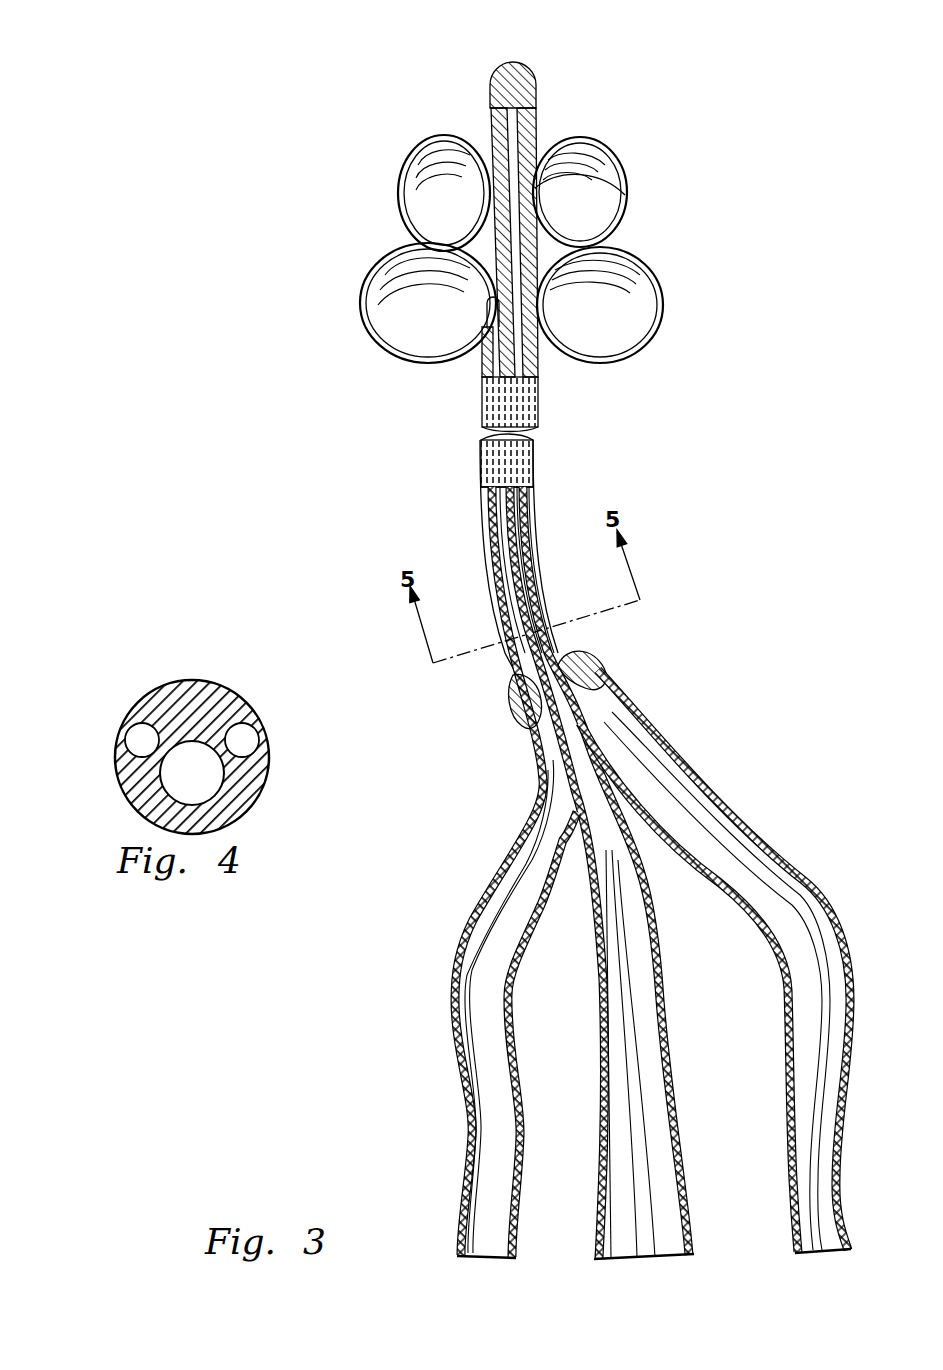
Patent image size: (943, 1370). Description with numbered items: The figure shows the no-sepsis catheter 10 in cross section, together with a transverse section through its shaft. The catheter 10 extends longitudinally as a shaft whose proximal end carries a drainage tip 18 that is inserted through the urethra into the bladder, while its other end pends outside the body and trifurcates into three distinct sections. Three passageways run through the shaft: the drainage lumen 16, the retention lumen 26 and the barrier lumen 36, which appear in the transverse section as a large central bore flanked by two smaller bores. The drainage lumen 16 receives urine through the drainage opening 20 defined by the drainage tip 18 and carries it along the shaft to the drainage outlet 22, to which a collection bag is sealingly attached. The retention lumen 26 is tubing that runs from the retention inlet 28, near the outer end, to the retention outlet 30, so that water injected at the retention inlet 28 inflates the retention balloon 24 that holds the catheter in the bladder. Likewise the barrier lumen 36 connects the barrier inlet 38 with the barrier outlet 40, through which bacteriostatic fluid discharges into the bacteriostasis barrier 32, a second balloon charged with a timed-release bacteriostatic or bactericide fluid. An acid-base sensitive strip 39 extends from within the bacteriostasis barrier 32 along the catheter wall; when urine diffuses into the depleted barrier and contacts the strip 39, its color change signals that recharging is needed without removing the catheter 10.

In FIG. 3, the no-sepsis catheter 10 is at (268, 207).
In FIG. 3, the drainage tip 18 is at (527, 66).
In FIG. 3, the drainage opening 20 is at (540, 112).
In FIG. 3, the retention balloon 24 is at (600, 133).
In FIG. 3, the retention outlet 30 is at (625, 195).
In FIG. 3, the bacteriostasis barrier 32 is at (620, 363).
In FIG. 3, the barrier outlet 40 is at (493, 283).
In FIG. 3, the acid-base sensitive strip 39 is at (482, 387).
In FIG. 3, the drainage lumen 16 is at (580, 723).
In FIG. 4, the drainage lumen 16 is at (200, 784).
In FIG. 3, the retention lumen 26 is at (657, 797).
In FIG. 4, the retention lumen 26 is at (244, 742).
In FIG. 3, the barrier lumen 36 is at (497, 943).
In FIG. 4, the barrier lumen 36 is at (140, 742).
In FIG. 3, the barrier inlet 38 is at (492, 1258).
In FIG. 3, the drainage outlet 22 is at (660, 1258).
In FIG. 3, the retention inlet 28 is at (815, 1255).